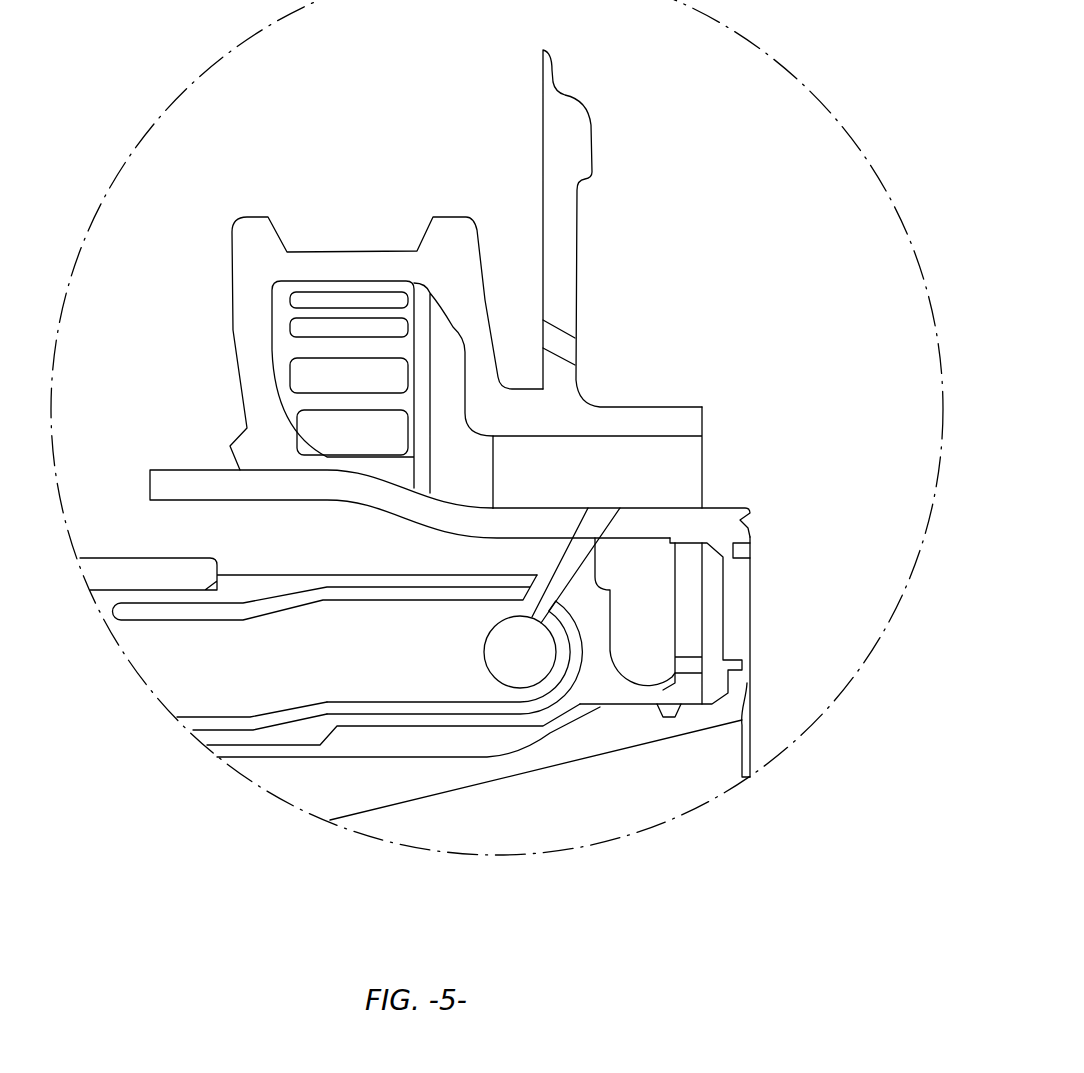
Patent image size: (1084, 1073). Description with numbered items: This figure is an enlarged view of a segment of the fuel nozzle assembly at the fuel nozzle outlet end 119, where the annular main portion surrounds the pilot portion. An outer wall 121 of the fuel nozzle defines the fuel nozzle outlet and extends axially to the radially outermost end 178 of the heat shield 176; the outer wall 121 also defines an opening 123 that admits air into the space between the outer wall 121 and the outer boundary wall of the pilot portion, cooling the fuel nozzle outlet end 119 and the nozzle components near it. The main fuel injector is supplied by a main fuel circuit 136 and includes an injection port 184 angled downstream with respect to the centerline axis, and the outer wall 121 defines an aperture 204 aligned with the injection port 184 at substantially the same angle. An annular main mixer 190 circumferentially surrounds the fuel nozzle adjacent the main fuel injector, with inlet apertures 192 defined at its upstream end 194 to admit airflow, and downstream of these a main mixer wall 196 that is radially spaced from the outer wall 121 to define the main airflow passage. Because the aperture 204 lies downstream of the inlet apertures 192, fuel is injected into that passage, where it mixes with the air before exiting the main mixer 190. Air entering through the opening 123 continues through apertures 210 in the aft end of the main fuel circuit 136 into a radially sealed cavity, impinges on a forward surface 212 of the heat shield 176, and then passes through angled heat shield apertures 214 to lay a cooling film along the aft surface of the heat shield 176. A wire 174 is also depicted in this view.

The fuel nozzle outlet end 119 is at (721, 383).
The outer wall 121 is at (200, 484).
The opening 123 is at (173, 528).
The main fuel circuit 136 is at (193, 665).
The wire 174 is at (763, 736).
The heat shield 176 is at (737, 637).
The radially outermost end 178 is at (723, 508).
The injection port 184 is at (560, 560).
The main mixer 190 is at (328, 250).
The inlet apertures 192 is at (373, 373).
The upstream end 194 is at (332, 140).
The main mixer wall 196 is at (648, 420).
The aperture 204 is at (599, 505).
The apertures 210 is at (665, 592).
The forward surface 212 is at (690, 603).
The heat shield apertures 214 is at (757, 552).